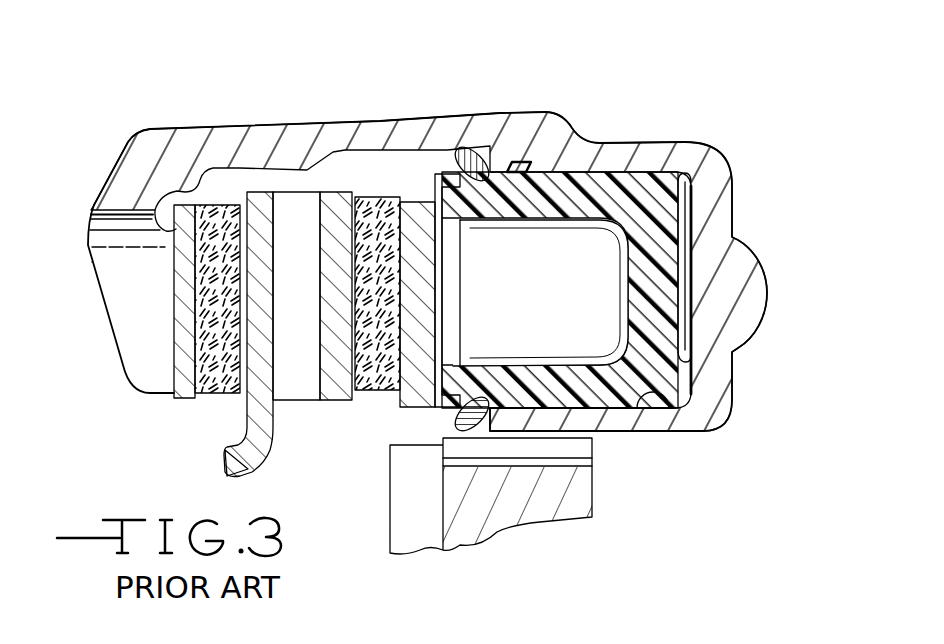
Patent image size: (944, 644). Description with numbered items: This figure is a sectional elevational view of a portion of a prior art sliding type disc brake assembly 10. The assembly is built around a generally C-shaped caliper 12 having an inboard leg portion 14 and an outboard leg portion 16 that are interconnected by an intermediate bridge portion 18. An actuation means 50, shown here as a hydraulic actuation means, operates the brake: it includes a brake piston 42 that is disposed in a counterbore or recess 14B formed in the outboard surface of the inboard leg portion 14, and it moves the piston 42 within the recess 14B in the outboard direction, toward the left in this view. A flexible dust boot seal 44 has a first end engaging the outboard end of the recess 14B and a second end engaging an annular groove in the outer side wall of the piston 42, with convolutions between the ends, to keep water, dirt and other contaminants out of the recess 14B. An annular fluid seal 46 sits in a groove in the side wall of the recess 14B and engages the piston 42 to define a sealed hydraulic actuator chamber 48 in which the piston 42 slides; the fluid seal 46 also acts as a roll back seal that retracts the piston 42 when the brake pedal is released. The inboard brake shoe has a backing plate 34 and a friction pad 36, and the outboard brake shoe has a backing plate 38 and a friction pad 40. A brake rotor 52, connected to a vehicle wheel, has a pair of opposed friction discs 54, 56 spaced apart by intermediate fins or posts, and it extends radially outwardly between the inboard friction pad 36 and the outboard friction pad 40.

The prior art disc brake assembly 10 is at (703, 127).
The caliper 12 is at (168, 128).
The inboard leg portion 14 is at (657, 157).
The recess 14B is at (666, 408).
The outboard leg portion 16 is at (120, 304).
The intermediate bridge portion 18 is at (440, 132).
The backing plate 34 is at (420, 200).
The friction pad 36 is at (370, 197).
The backing plate 38 is at (174, 397).
The friction pad 40 is at (212, 393).
The brake piston 42 is at (683, 390).
The dust boot seal 44 is at (450, 428).
The fluid seal 46 is at (510, 425).
The hydraulic actuator chamber 48 is at (688, 273).
The actuation means 50 is at (700, 230).
The brake rotor 52 is at (252, 472).
The friction disc 54 is at (330, 207).
The friction disc 56 is at (255, 212).